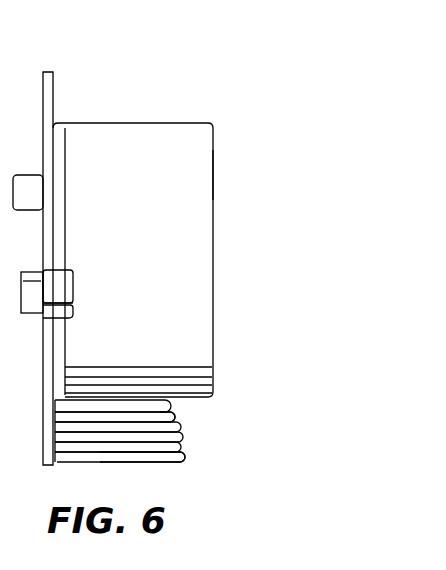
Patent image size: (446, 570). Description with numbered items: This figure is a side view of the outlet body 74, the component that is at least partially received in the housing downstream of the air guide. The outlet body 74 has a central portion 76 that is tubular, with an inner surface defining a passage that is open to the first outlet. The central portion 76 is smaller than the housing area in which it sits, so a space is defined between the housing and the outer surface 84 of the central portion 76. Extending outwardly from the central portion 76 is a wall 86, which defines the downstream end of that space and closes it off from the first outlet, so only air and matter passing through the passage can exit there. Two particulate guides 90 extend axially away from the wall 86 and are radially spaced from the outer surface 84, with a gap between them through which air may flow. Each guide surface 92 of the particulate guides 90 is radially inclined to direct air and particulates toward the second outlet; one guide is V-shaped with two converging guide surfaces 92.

The outlet body 74 is at (170, 62).
The central portion 76 is at (214, 182).
The outer surface 84 is at (180, 147).
The wall 86 is at (54, 80).
The particulate guides 90 is at (150, 455).
The guide surface 92 is at (163, 432).